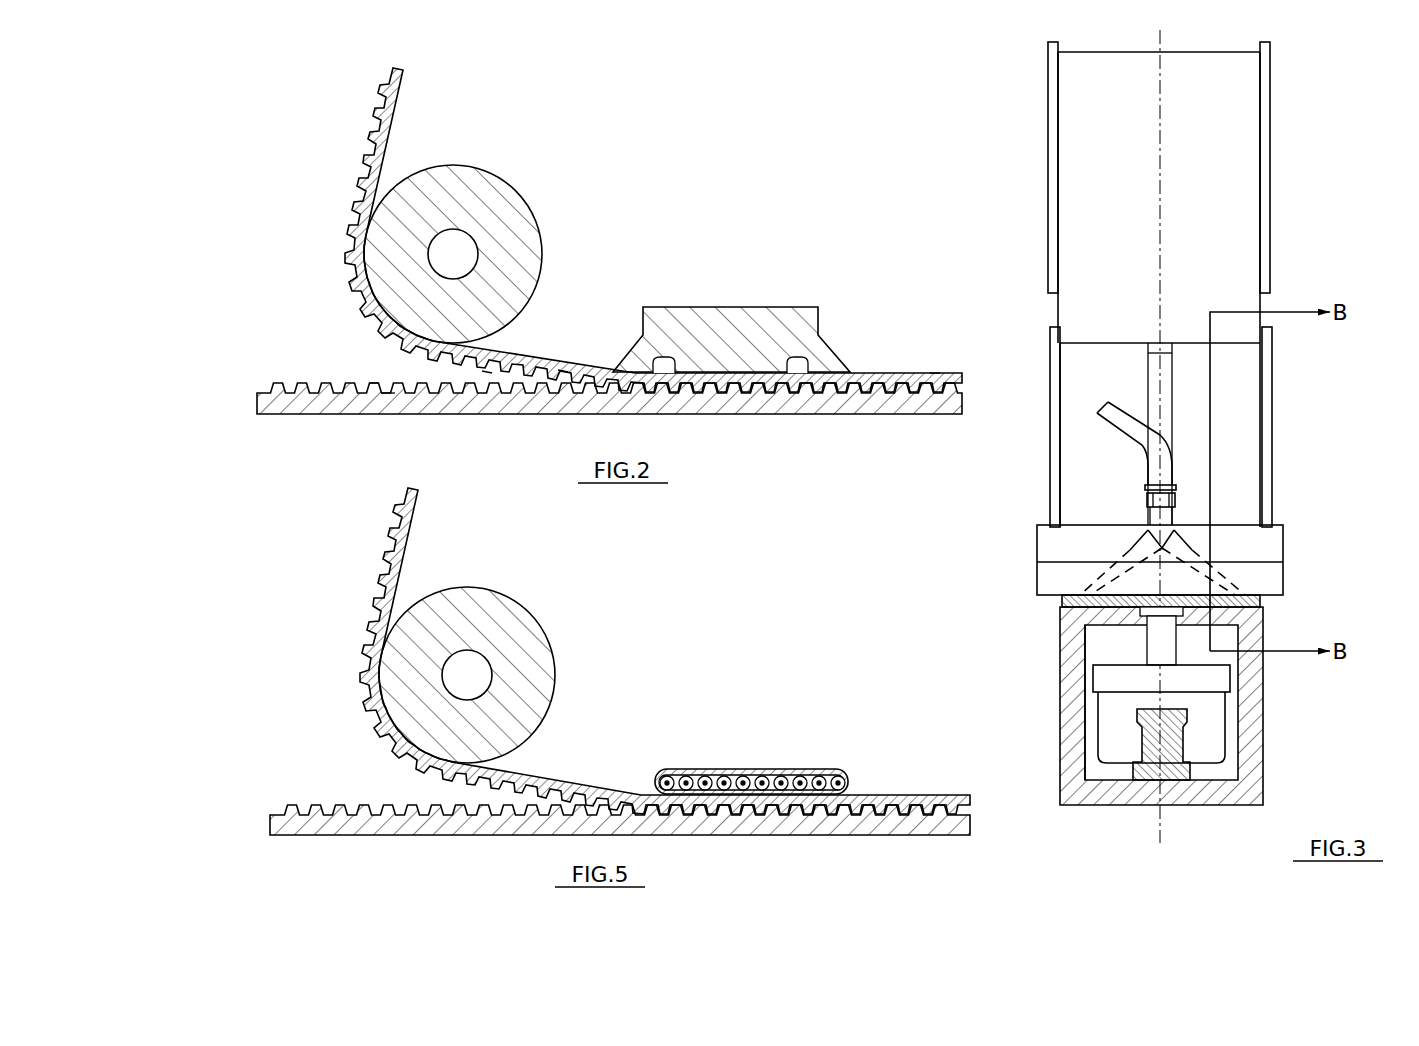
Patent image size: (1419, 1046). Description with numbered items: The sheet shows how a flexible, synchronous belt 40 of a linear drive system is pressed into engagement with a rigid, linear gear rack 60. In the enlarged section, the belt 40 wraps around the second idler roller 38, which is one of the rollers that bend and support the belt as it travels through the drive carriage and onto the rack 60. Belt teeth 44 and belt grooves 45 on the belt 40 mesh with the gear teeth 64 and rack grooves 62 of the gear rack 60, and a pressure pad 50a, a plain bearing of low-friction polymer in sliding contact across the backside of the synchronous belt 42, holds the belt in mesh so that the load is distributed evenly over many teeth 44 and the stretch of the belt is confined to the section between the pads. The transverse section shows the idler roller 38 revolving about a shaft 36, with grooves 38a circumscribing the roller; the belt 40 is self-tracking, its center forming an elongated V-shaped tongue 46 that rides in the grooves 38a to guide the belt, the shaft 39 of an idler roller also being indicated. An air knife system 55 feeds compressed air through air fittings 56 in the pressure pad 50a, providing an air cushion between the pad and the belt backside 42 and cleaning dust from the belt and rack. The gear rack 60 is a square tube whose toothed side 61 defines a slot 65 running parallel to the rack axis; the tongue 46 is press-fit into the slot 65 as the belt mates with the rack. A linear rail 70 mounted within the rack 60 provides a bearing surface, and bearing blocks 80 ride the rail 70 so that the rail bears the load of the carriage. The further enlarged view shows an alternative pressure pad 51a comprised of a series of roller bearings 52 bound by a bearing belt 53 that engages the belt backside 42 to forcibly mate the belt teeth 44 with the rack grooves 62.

In FIG. 3, the shaft 36 is at (1270, 160).
In FIG. 2, the second idler roller 38 is at (545, 216).
In FIG. 5, the second idler roller 38 is at (549, 634).
In FIG. 3, the grooves 38a is at (1148, 342).
In FIG. 3, the idler roller shaft 39 is at (1160, 370).
In FIG. 2, the synchronous belt 40 is at (884, 365).
In FIG. 5, the synchronous belt 40 is at (549, 778).
In FIG. 3, the synchronous belt 40 is at (1062, 600).
In FIG. 2, the backside of the synchronous belt 42 is at (935, 375).
In FIG. 2, the belt teeth 44 is at (487, 372).
In FIG. 2, the belt grooves 45 is at (563, 372).
In FIG. 3, the V-shaped tongue 46 is at (1203, 588).
In FIG. 2, the pressure pad 50a is at (822, 306).
In FIG. 3, the pressure pad 50a is at (1218, 555).
In FIG. 5, the pressure pad 51a is at (770, 796).
In FIG. 5, the roller bearings 52 is at (785, 802).
In FIG. 5, the bearing belt 53 is at (797, 767).
In FIG. 3, the air knife system 55 is at (1167, 446).
In FIG. 3, the air fittings 56 is at (1175, 487).
In FIG. 2, the gear rack 60 is at (809, 414).
In FIG. 5, the gear rack 60 is at (415, 835).
In FIG. 3, the gear rack 60 is at (1138, 720).
In FIG. 3, the side of the rack 61 is at (1088, 616).
In FIG. 2, the rack grooves 62 is at (388, 393).
In FIG. 2, the gear teeth 64 is at (377, 384).
In FIG. 3, the slot 65 is at (1177, 622).
In FIG. 3, the linear rail 70 is at (1177, 773).
In FIG. 3, the bearing blocks 80 is at (1213, 735).